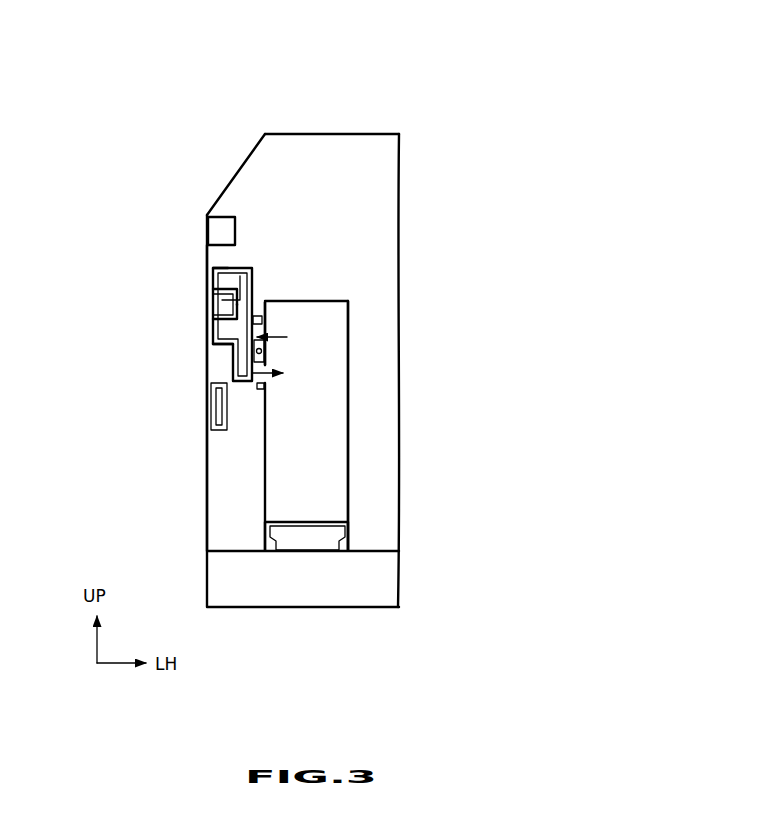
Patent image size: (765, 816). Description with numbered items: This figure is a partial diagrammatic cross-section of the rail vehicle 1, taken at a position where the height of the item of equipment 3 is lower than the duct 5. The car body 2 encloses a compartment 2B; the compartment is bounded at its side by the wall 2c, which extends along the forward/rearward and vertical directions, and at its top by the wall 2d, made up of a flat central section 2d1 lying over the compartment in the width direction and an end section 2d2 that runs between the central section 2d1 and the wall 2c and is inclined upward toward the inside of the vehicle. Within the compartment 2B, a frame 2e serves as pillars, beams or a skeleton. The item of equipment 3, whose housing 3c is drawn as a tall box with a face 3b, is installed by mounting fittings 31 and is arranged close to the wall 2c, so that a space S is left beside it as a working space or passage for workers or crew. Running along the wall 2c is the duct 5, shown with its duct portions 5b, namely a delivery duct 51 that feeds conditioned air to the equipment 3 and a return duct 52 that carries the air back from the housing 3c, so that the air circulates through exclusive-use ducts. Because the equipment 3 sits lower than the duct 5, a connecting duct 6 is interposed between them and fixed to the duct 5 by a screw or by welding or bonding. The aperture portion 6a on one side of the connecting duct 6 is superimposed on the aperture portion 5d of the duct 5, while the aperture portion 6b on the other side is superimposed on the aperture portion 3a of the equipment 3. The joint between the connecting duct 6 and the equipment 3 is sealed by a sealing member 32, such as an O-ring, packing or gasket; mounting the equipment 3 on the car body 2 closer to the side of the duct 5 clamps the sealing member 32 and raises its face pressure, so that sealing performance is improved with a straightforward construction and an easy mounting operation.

The image forming apparatus 1 is at (178, 96).
The car body 2 is at (273, 342).
The central section 2d1 is at (289, 133).
The end section 2d2 is at (223, 193).
The wall 2d is at (285, 148).
The compartment 2B is at (372, 156).
The frame 2e is at (210, 213).
The wall 2c is at (207, 472).
The item of equipment 3 is at (312, 476).
The aperture portion 3a is at (288, 337).
The side face 3b is at (330, 438).
The housing 3c is at (270, 315).
The mounting fittings 31 is at (265, 550).
The sealing member 32 is at (264, 341).
The duct 5 is at (147, 312).
The guide rail 5b is at (147, 314).
The aperture portion 5d is at (215, 281).
The delivery duct 51 is at (208, 318).
The return duct 52 is at (208, 291).
The connecting duct 6 is at (312, 320).
The aperture portion 6a is at (222, 269).
The aperture portion 6b is at (257, 318).
The space S is at (375, 531).